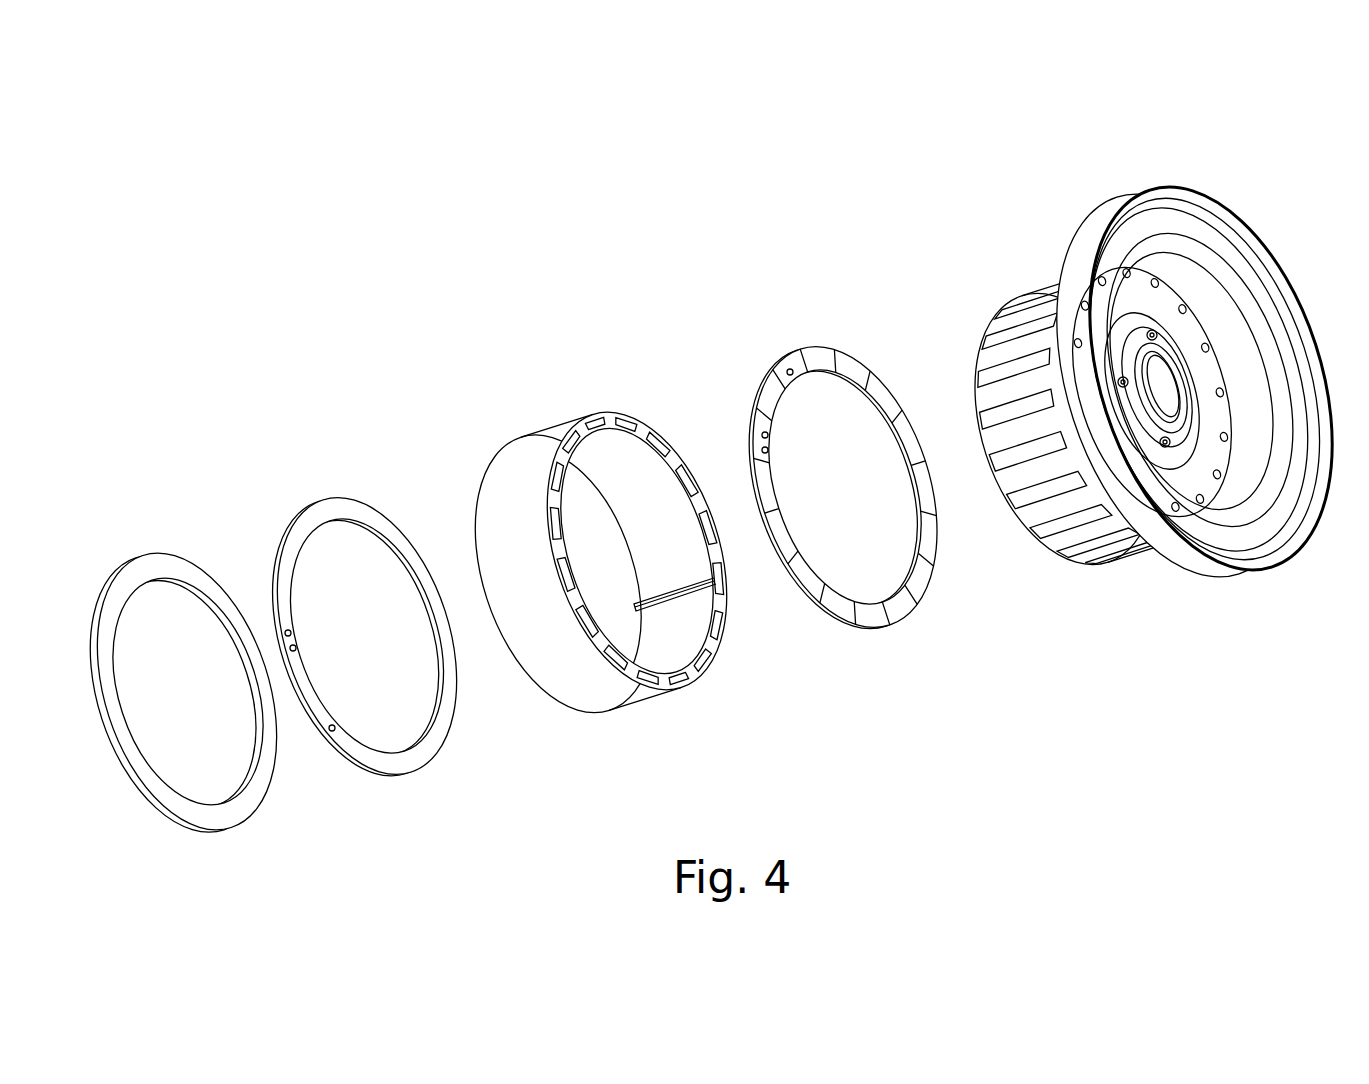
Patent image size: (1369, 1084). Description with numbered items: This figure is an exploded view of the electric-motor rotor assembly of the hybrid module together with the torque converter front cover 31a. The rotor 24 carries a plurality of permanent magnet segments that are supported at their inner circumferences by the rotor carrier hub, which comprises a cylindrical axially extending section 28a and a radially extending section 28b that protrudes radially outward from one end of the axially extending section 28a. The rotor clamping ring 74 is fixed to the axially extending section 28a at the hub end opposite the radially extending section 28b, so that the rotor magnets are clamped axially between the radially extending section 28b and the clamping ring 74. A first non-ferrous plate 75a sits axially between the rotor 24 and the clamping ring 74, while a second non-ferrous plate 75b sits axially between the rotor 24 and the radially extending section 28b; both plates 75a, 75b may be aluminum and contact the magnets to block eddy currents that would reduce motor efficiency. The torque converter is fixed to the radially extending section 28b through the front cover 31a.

The rotor clamping ring 74 is at (142, 555).
The first non-ferrous plate 75a is at (298, 512).
The second non-ferrous plate 75b is at (773, 373).
The rotor 24 is at (490, 467).
The axially extending section 28a is at (1038, 295).
The radially extending section 28b is at (1102, 495).
The front cover 31a is at (1181, 170).